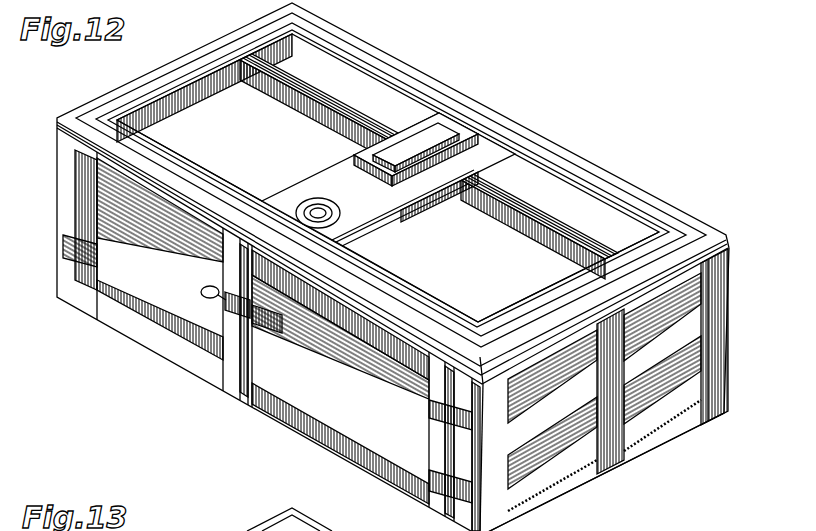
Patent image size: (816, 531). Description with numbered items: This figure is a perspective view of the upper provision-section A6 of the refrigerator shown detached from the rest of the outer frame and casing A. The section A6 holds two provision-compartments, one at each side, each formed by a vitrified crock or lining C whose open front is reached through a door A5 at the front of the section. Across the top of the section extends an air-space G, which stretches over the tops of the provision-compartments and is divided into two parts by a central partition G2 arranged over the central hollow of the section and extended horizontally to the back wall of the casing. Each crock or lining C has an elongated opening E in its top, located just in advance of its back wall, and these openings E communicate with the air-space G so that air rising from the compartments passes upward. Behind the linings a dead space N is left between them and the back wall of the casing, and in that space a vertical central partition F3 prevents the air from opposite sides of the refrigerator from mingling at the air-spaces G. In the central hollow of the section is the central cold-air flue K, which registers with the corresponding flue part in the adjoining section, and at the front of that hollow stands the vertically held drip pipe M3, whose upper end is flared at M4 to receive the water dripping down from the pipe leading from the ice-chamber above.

The outer frame and casing A is at (56, 158).
The door A5 is at (80, 262).
The upper provision-section A6 is at (671, 444).
The dead space N is at (352, 88).
The central cold-air flue K is at (432, 146).
The vertical central partition F3 is at (530, 146).
The air-space G is at (429, 180).
The opening E is at (328, 116).
The crock or lining C is at (388, 221).
The flared upper end M4 is at (309, 198).
The pipe M3 is at (334, 222).
The central partition G2 is at (405, 215).